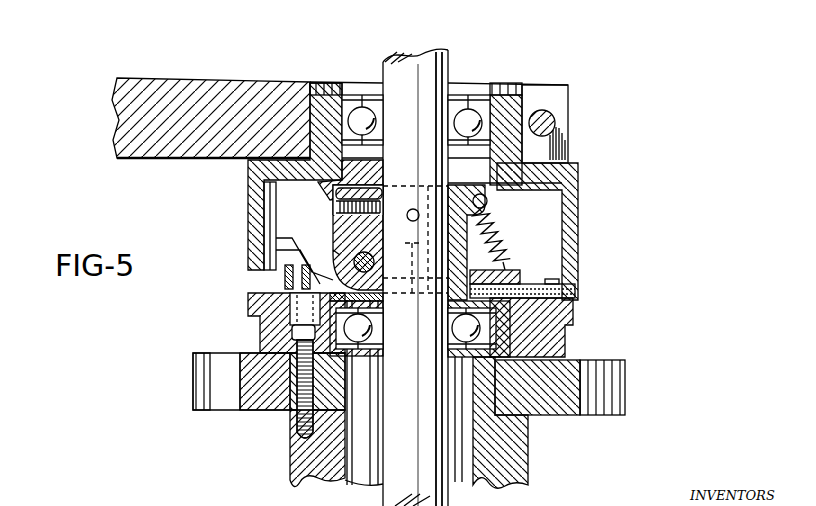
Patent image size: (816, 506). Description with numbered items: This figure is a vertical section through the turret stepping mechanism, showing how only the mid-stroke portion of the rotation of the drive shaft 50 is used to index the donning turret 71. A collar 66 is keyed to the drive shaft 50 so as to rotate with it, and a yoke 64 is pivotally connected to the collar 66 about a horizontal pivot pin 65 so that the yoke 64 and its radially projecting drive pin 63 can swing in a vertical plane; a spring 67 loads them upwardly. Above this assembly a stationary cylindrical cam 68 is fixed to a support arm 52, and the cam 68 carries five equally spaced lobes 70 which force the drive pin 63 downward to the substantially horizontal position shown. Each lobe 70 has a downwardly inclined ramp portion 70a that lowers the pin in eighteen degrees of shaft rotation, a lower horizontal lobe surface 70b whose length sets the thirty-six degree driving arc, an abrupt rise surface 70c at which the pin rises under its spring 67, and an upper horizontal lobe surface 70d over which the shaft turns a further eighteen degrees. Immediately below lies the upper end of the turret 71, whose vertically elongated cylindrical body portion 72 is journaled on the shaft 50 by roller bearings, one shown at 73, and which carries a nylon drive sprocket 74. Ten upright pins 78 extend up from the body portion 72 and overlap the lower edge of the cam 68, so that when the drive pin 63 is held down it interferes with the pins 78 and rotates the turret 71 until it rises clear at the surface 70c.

The drive shaft 50 is at (376, 498).
The support arm 52 is at (228, 82).
The drive pin 63 is at (577, 282).
The yoke 64 is at (510, 267).
The pivot pin 65 is at (375, 270).
The collar 66 is at (333, 225).
The spring 67 is at (507, 233).
The stationary cylindrical cam 68 is at (578, 177).
The cam lobe 70 is at (577, 258).
The downwardly inclined ramp portion 70a is at (313, 254).
The lower horizontal lobe surface 70b is at (317, 285).
The abrupt rise surface 70c is at (417, 295).
The upper horizontal lobe surface 70d is at (470, 186).
The donning turret 71 is at (541, 455).
The cylindrical body portion 72 is at (297, 457).
The roller bearing 73 is at (452, 357).
The drive sprocket 74 is at (625, 387).
The upright pins 78 is at (268, 264).